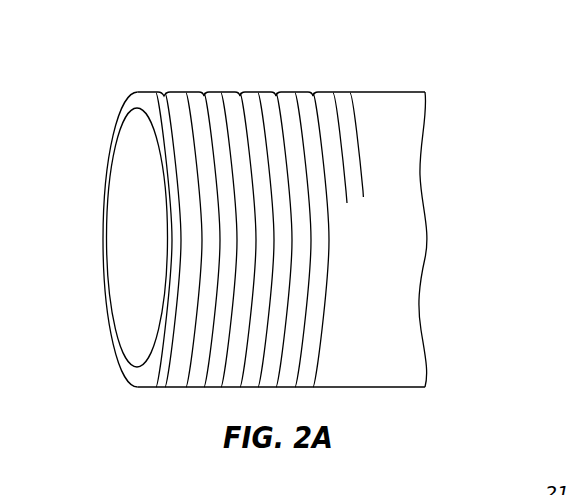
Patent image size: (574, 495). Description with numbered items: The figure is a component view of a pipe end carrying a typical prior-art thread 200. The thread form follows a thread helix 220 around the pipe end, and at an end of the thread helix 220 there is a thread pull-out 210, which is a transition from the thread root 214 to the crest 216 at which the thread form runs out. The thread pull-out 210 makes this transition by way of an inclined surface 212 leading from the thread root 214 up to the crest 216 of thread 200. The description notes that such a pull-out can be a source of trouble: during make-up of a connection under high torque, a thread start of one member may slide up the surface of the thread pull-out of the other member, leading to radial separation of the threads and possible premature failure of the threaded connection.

The thread 200 is at (138, 55).
The thread pull-out 210 is at (363, 196).
The inclined surface 212 is at (341, 148).
The thread root 214 is at (314, 94).
The crest 216 is at (412, 267).
The thread helix 220 is at (291, 85).